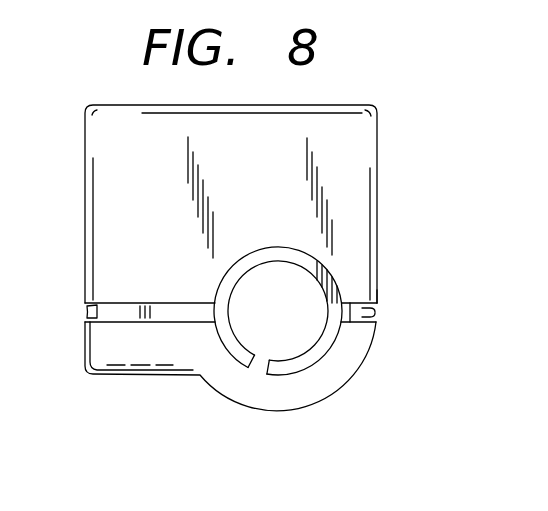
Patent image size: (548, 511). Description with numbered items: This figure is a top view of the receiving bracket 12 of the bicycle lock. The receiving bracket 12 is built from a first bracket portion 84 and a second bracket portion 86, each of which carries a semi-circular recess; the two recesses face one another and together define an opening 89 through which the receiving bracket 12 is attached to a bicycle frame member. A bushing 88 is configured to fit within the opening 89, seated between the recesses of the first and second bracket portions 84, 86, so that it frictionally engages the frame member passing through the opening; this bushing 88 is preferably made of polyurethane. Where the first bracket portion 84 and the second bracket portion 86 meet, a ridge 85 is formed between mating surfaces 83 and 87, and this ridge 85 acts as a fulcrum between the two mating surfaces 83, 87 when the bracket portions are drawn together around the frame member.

The receiving bracket 12 is at (392, 337).
The mating surface 83 is at (376, 305).
The first bracket portion 84 is at (122, 153).
The ridge 85 is at (87, 309).
The second bracket portion 86 is at (162, 360).
The mating surface 87 is at (376, 323).
The bushing 88 is at (120, 310).
The opening 89 is at (290, 335).